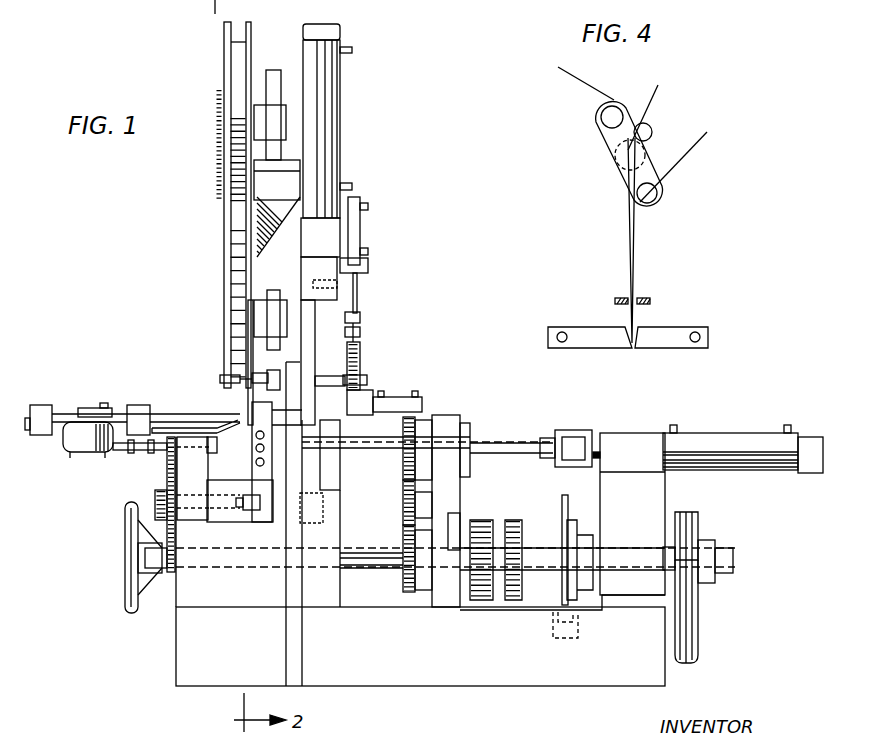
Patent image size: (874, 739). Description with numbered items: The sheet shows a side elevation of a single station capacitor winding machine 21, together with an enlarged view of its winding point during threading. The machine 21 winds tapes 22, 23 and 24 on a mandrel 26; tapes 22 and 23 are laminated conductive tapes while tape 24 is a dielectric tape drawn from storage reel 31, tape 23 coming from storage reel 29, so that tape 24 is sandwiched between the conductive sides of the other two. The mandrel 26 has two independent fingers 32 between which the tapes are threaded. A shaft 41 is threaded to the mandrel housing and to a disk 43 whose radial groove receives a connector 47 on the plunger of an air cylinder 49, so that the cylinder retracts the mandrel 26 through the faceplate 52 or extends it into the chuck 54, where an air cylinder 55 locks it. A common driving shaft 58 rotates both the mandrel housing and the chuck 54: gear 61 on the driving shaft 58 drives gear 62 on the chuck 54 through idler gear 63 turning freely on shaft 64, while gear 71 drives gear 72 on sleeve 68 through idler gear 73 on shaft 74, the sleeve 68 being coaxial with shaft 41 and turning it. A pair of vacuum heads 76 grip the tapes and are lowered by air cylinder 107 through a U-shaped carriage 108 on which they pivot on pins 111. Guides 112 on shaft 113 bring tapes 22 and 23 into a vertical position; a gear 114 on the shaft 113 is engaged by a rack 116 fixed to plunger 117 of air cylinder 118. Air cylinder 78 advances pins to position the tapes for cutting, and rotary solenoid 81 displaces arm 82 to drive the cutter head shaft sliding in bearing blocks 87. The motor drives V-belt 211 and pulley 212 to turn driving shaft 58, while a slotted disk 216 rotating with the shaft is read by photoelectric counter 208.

In FIG. 1, the capacitor winding machine 21 is at (172, 368).
In FIG. 4, the tape 22 is at (571, 80).
In FIG. 1, the tape 23 is at (232, 358).
In FIG. 4, the tape 23 is at (684, 150).
In FIG. 1, the tape 24 is at (237, 224).
In FIG. 4, the tape 24 is at (655, 97).
In FIG. 4, the mandrel 26 is at (614, 279).
In FIG. 1, the storage reel 29 is at (254, 246).
In FIG. 1, the storage reel 31 is at (224, 33).
In FIG. 4, the fingers 32 is at (615, 300).
In FIG. 1, the shaft 41 is at (500, 420).
In FIG. 1, the disk 43 is at (550, 436).
In FIG. 1, the connector 47 is at (563, 432).
In FIG. 1, the air cylinder 49 is at (718, 433).
In FIG. 1, the faceplate 52 is at (303, 632).
In FIG. 1, the chuck 54 is at (212, 455).
In FIG. 1, the air cylinder 55 is at (120, 458).
In FIG. 1, the driving shaft 58 is at (352, 570).
In FIG. 1, the gear 61 is at (170, 575).
In FIG. 1, the gear 62 is at (170, 455).
In FIG. 1, the gear 63 is at (160, 492).
In FIG. 1, the shaft 64 is at (185, 527).
In FIG. 1, the sleeve 68 is at (356, 465).
In FIG. 1, the gear 71 is at (404, 540).
In FIG. 1, the gear 72 is at (403, 470).
In FIG. 1, the gear 73 is at (403, 510).
In FIG. 1, the shaft 74 is at (448, 492).
In FIG. 4, the vacuum heads 76 is at (570, 327).
In FIG. 1, the air cylinder 78 is at (420, 397).
In FIG. 1, the rotary solenoid 81 is at (70, 440).
In FIG. 1, the arm 82 is at (95, 408).
In FIG. 1, the bearing blocks 87 is at (47, 405).
In FIG. 1, the air cylinder 107 is at (342, 90).
In FIG. 1, the U-shaped carriage 108 is at (315, 325).
In FIG. 1, the pins 111 is at (245, 505).
In FIG. 1, the guides 112 is at (222, 382).
In FIG. 4, the guides 112 is at (600, 120).
In FIG. 1, the shaft 113 is at (334, 376).
In FIG. 1, the gear 114 is at (362, 380).
In FIG. 1, the rack 116 is at (360, 352).
In FIG. 1, the plunger 117 is at (358, 298).
In FIG. 1, the air cylinder 118 is at (362, 243).
In FIG. 1, the photoelectric counter 208 is at (578, 632).
In FIG. 1, the V-belt 211 is at (698, 630).
In FIG. 1, the pulley 212 is at (700, 528).
In FIG. 1, the slotted disk 216 is at (560, 505).